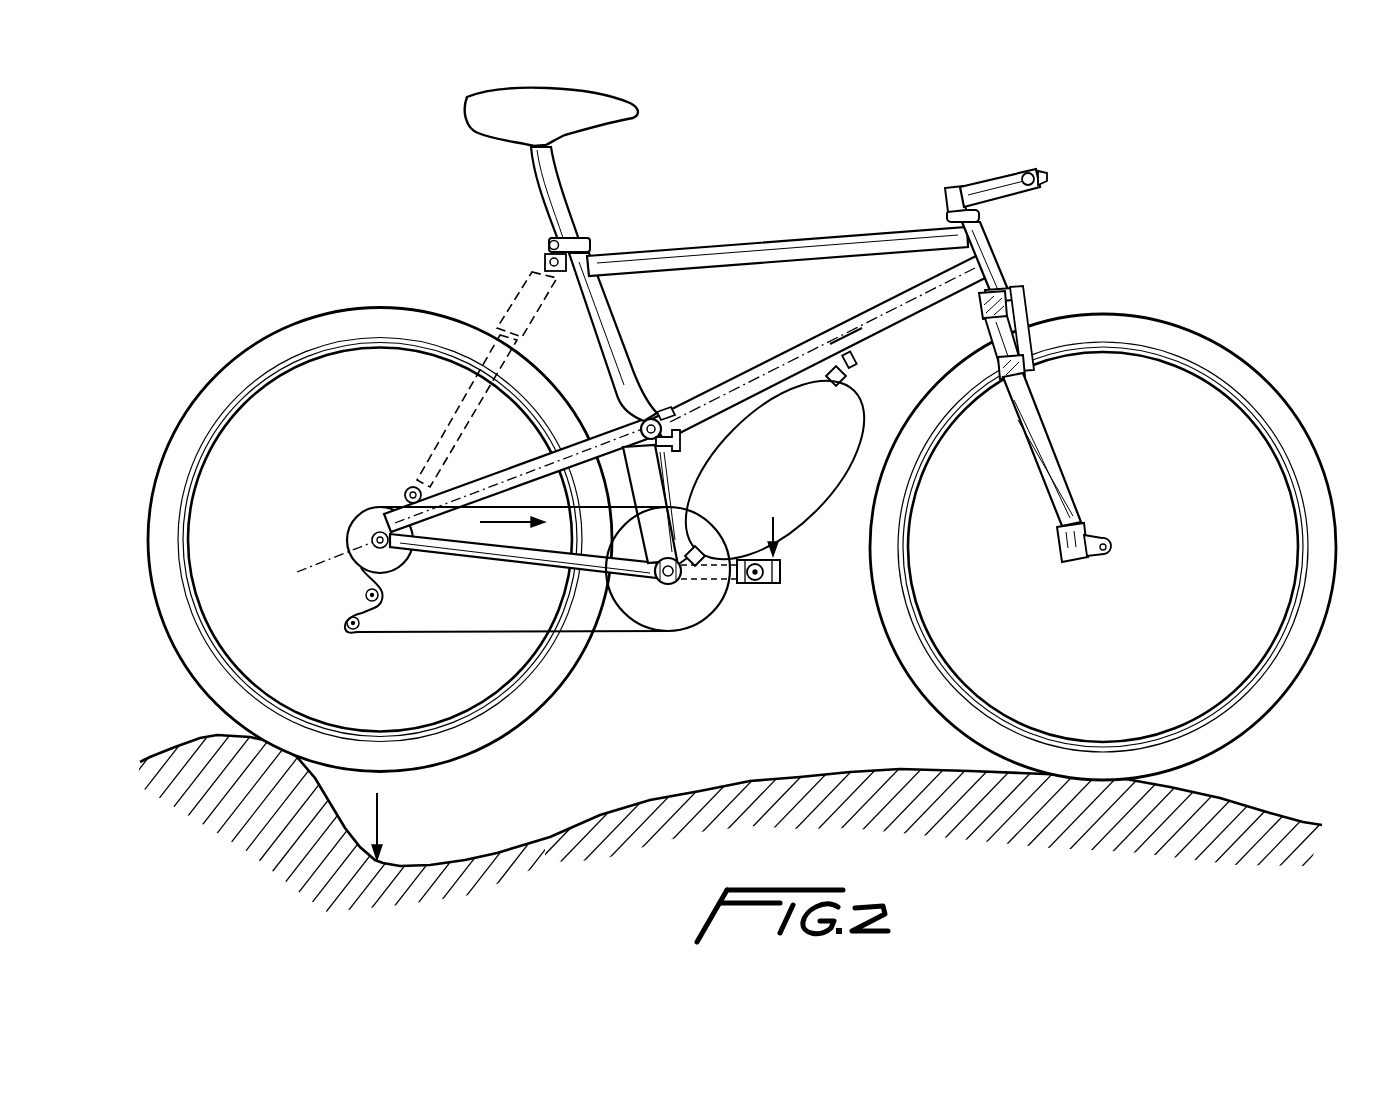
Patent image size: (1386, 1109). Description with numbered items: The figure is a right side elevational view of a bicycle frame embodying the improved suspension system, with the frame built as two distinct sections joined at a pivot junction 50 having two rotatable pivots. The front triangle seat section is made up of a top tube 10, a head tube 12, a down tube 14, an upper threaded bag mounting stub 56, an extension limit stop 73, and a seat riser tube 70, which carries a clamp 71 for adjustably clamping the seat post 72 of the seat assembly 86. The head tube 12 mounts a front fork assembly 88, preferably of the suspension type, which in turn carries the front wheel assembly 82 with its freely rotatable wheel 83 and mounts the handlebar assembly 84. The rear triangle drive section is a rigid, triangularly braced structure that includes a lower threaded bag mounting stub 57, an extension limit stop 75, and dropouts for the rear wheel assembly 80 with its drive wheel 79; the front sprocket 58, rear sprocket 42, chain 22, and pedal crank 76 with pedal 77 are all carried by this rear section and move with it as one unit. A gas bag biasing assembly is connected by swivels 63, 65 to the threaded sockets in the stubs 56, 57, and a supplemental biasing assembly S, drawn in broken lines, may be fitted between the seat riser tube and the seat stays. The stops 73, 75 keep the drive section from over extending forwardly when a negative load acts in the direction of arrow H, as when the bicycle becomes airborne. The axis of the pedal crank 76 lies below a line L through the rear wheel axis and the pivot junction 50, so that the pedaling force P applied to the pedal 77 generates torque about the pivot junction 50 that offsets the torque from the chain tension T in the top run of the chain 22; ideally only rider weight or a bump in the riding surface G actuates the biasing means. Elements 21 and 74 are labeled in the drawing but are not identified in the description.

The top tube 10 is at (800, 236).
The head tube 12 is at (992, 252).
The down tube 14 is at (905, 312).
The swing arm 21 is at (520, 485).
The chain 22 is at (462, 634).
The rear sprocket 42 is at (358, 524).
The pivot junction 50 is at (653, 417).
The upper threaded bag mounting stub 56 is at (851, 358).
The lower threaded bag mounting stub 57 is at (647, 633).
The front sprocket 58 is at (683, 620).
The swivel 63 is at (707, 558).
The swivel 65 is at (840, 393).
The seat riser tube 70 is at (595, 347).
The clamp 71 is at (585, 247).
The seat post 72 is at (567, 196).
The extension limit stop 73 is at (668, 413).
The clamp 74 is at (858, 380).
The extension limit stop 75 is at (664, 452).
The pedal crank 76 is at (674, 588).
The pedal 77 is at (782, 573).
The drive wheel 79 is at (349, 309).
The rear wheel assembly 80 is at (380, 497).
The front wheel assembly 82 is at (1103, 489).
The wheel 83 is at (1237, 342).
The handlebar assembly 84 is at (990, 175).
The seat assembly 86 is at (572, 147).
The front fork assembly 88 is at (1066, 466).
The supplemental biasing assembly S is at (512, 280).
The line L is at (793, 362).
The pedaling force P is at (777, 523).
The chain tension T is at (513, 527).
The riding surface G is at (858, 770).
The arrow H is at (380, 808).